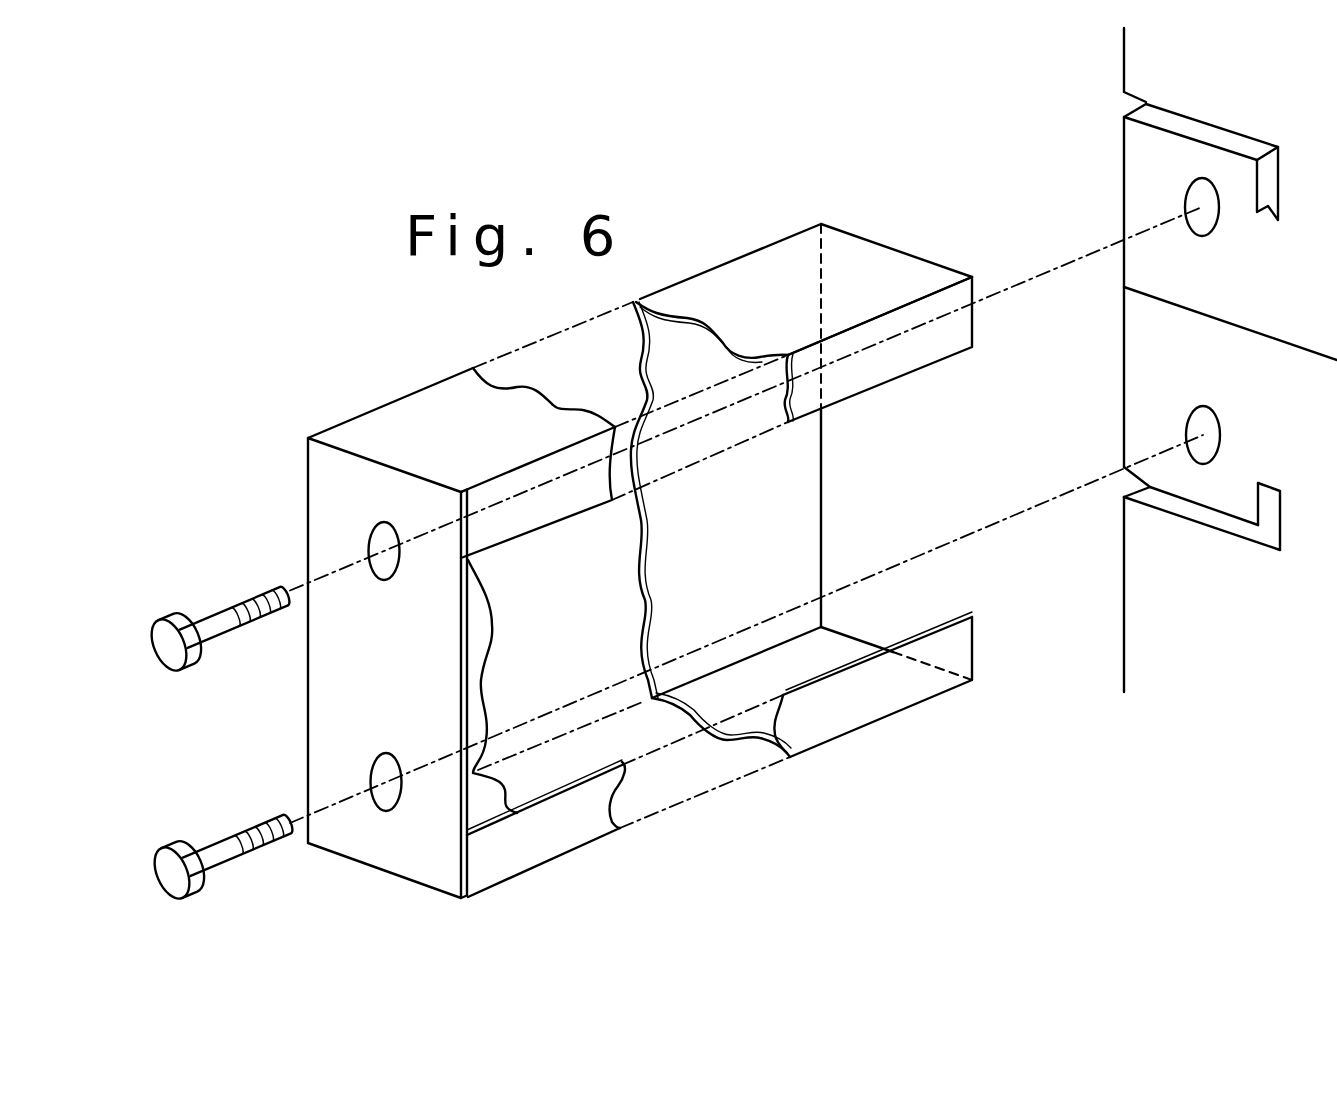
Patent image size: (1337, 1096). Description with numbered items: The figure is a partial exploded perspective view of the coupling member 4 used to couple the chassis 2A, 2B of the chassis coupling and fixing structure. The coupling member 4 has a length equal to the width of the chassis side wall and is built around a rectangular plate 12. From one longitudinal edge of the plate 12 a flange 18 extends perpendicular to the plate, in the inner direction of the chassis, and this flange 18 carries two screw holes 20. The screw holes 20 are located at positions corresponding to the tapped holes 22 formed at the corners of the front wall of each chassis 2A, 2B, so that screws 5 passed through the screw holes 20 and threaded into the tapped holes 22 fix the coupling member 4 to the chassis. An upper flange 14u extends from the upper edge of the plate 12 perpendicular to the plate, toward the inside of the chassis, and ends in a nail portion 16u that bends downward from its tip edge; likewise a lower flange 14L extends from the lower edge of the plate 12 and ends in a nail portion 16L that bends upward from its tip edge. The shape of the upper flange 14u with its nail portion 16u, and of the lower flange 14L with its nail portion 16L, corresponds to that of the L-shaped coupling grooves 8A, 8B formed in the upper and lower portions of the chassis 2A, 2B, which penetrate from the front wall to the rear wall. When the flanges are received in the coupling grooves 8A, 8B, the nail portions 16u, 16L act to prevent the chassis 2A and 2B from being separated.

The coupling member 4 is at (736, 795).
The rectangular plate 12 is at (812, 505).
The upper flange 14u is at (920, 275).
The lower flange 14L is at (852, 640).
The nail portion 16u is at (962, 331).
The nail portion 16L is at (980, 662).
The flange 18 is at (347, 669).
The screw holes 20 is at (370, 538).
The screws 5 is at (212, 634).
The tapped holes 22 is at (1208, 228).
The chassis 2A is at (1182, 522).
The chassis 2B is at (1145, 247).
The coupling groove 8A is at (1215, 520).
The coupling groove 8B is at (1200, 127).